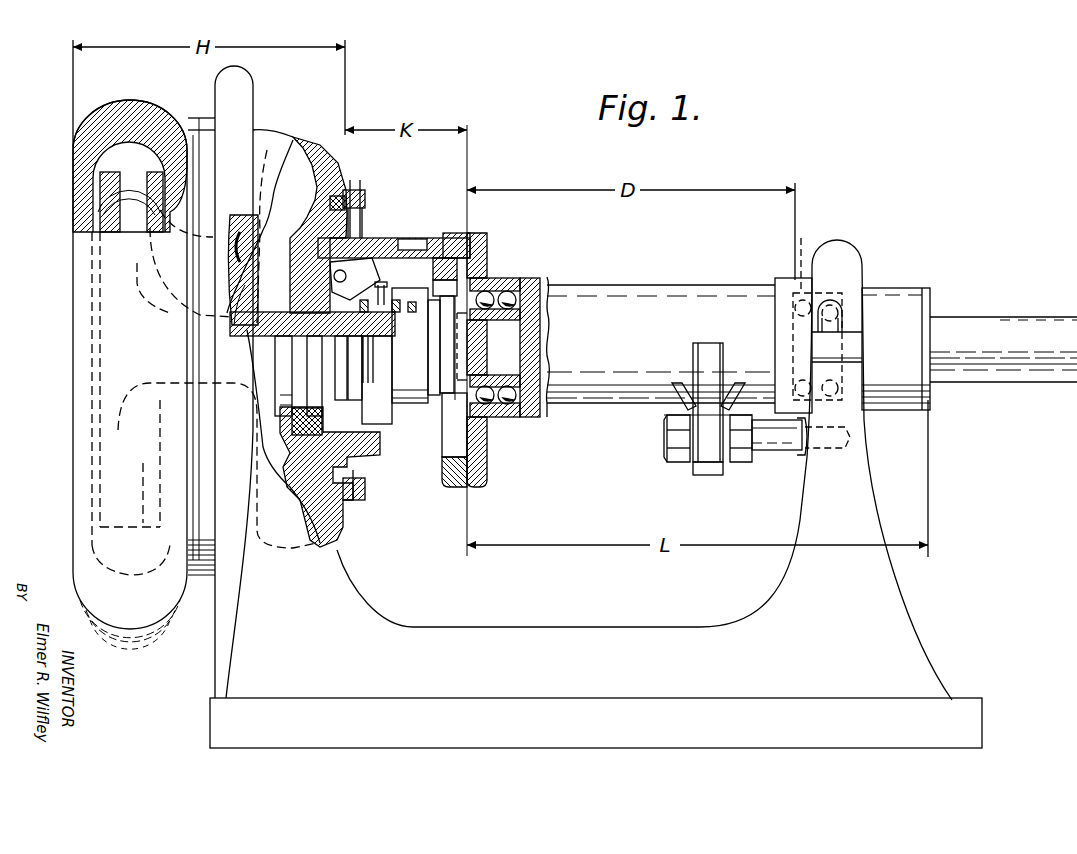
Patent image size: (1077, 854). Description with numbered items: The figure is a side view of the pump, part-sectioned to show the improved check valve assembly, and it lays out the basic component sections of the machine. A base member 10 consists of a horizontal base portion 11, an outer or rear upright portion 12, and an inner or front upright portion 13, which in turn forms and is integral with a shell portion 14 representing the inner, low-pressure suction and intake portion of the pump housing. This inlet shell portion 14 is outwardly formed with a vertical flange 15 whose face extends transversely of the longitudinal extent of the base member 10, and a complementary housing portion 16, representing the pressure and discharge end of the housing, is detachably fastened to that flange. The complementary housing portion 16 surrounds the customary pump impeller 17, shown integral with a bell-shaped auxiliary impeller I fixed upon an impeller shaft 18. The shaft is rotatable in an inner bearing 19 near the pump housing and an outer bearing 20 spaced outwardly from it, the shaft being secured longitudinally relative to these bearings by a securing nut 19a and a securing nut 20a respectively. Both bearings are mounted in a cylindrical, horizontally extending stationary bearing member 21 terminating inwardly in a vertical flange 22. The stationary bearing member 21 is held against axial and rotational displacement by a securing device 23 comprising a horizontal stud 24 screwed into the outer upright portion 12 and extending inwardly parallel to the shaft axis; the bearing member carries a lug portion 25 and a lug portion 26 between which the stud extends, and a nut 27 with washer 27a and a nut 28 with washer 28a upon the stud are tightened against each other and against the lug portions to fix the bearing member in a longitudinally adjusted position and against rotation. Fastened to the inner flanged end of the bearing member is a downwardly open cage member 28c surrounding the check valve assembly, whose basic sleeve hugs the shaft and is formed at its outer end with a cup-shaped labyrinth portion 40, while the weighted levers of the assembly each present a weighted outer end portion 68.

The base member 10 is at (722, 620).
The horizontal base portion 11 is at (571, 735).
The outer upright portion 12 is at (880, 585).
The inner upright portion 13 is at (358, 588).
The shell portion 14 is at (338, 535).
The vertical flange 15 is at (197, 143).
The complementary housing portion 16 is at (76, 182).
The pump impeller 17 is at (107, 196).
The impeller shaft 18 is at (1002, 317).
The inner bearing 19 is at (500, 282).
The securing nut 19a is at (446, 398).
The outer bearing 20 is at (800, 290).
The securing nut 20a is at (863, 343).
The stationary bearing member 21 is at (643, 285).
The vertical flange 22 is at (490, 245).
The securing device 23 is at (683, 470).
The horizontal stud 24 is at (773, 443).
The lug portion 25 is at (704, 455).
The lug portion 26 is at (715, 472).
The nut 27 is at (666, 438).
The washer 27a is at (680, 385).
The nut 28 is at (741, 462).
The washer 28a is at (740, 385).
The cage member 28c is at (436, 240).
The cup-shaped labyrinth portion 40 is at (421, 300).
The weighted outer end portion 68 is at (371, 265).
The auxiliary impeller I is at (276, 300).